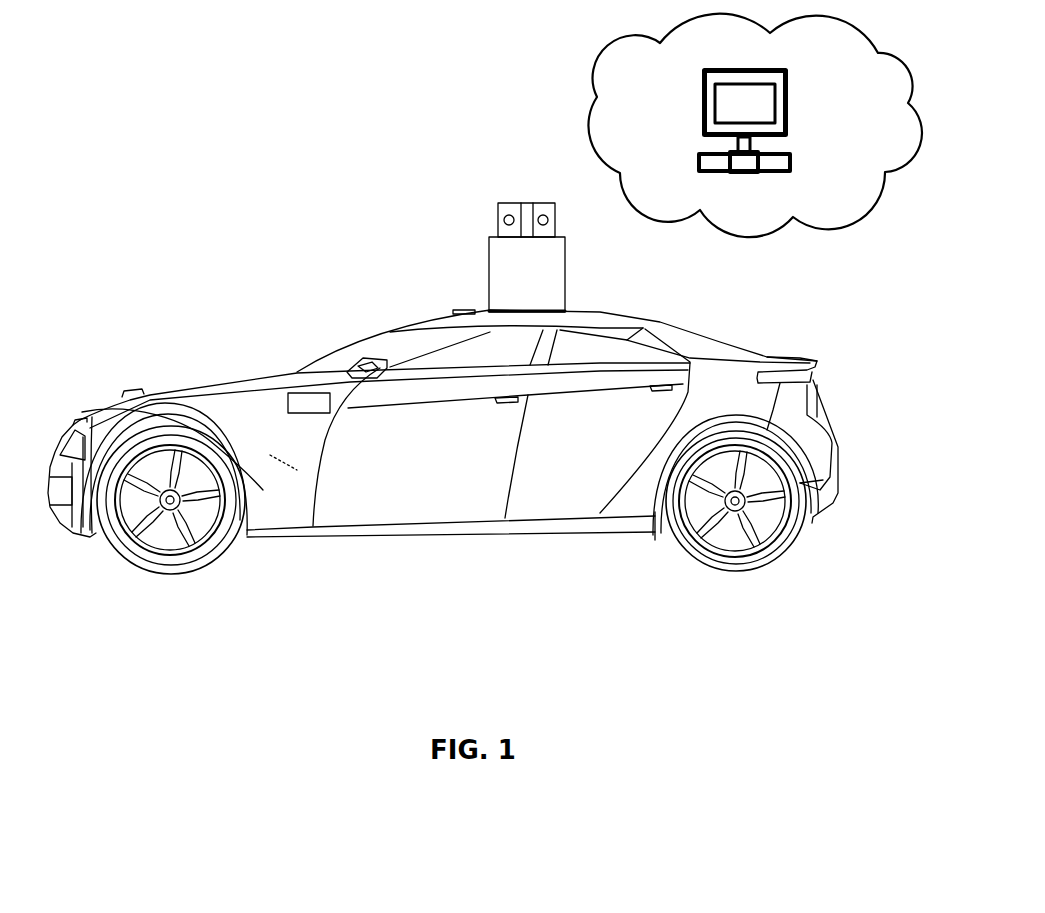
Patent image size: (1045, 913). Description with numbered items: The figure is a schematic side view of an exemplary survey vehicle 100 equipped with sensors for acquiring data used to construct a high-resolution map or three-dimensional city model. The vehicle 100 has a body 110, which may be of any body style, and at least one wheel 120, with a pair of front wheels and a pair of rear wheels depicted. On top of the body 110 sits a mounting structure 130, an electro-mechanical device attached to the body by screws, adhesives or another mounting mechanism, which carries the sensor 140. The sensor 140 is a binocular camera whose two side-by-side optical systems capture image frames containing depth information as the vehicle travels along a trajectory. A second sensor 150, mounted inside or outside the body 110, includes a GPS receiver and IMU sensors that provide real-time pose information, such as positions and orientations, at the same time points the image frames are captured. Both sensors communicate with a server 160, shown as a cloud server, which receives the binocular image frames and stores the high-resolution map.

The vehicle 100 is at (485, 326).
The body 110 is at (358, 296).
The wheel 120 is at (824, 545).
The mounting structure 130 is at (566, 272).
The sensor 140 is at (527, 202).
The sensor 150 is at (303, 391).
The server 160 is at (805, 100).